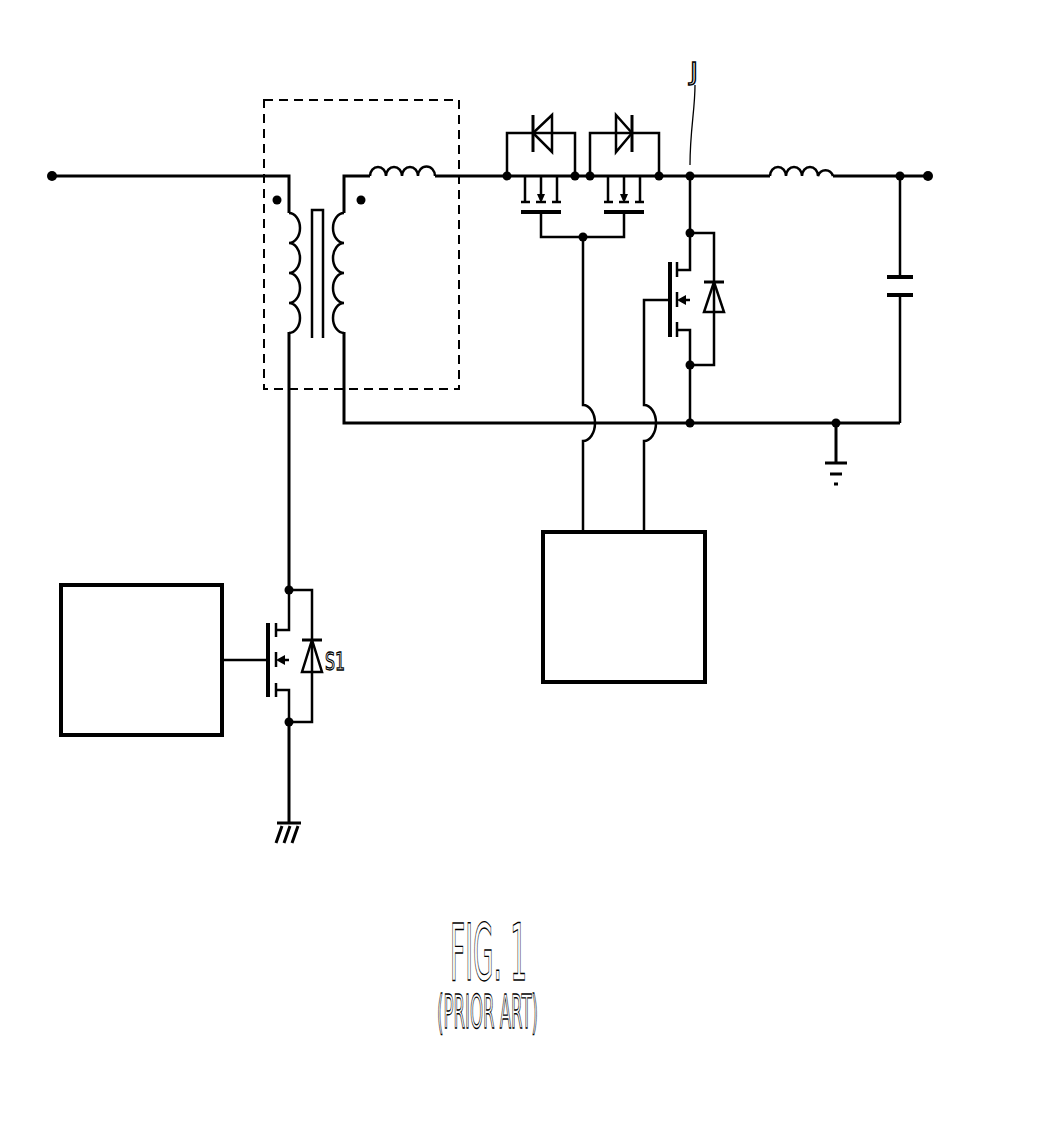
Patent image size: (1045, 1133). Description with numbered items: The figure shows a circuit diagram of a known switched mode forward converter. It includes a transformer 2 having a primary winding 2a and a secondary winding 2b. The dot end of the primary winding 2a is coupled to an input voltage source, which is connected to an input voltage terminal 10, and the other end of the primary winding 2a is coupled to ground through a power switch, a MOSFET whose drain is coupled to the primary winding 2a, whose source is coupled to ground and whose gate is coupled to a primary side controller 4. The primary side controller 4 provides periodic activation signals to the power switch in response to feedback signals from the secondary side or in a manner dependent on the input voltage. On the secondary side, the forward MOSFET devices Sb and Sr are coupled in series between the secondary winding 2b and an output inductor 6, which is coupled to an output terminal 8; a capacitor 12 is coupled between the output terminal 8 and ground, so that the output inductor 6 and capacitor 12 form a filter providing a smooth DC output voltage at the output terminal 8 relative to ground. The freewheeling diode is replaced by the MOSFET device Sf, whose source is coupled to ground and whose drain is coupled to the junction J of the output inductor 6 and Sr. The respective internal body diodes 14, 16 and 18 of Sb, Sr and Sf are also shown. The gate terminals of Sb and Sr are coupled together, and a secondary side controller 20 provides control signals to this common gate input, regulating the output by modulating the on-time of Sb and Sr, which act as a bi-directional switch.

The transformer 2 is at (322, 100).
The primary winding 2a is at (293, 213).
The secondary winding 2b is at (340, 213).
The primary side controller 4 is at (82, 585).
The output inductor 6 is at (828, 155).
The output terminal 8 is at (918, 184).
The input voltage terminal 10 is at (90, 178).
The capacitor 12 is at (907, 298).
The internal body diode 14 is at (545, 118).
The internal body diode 16 is at (620, 118).
The internal body diode 18 is at (722, 297).
The secondary side controller 20 is at (705, 598).